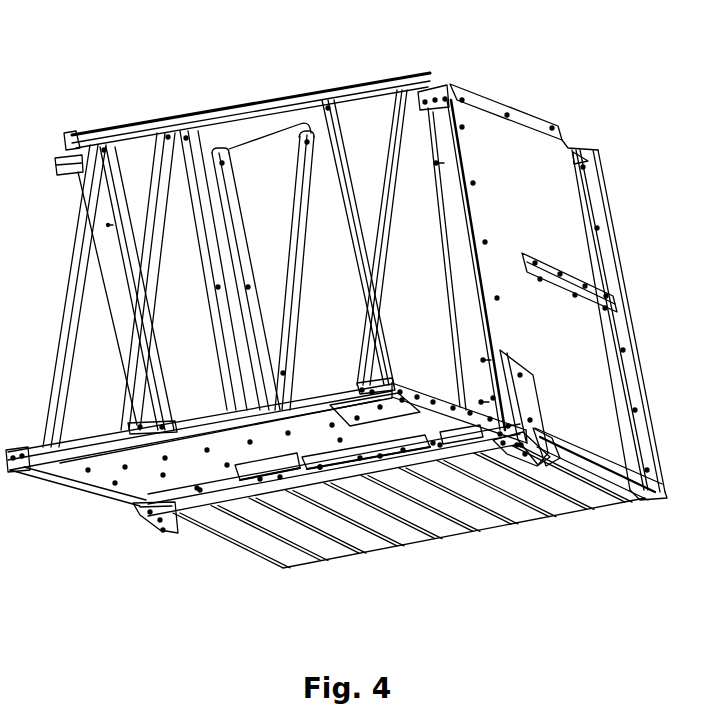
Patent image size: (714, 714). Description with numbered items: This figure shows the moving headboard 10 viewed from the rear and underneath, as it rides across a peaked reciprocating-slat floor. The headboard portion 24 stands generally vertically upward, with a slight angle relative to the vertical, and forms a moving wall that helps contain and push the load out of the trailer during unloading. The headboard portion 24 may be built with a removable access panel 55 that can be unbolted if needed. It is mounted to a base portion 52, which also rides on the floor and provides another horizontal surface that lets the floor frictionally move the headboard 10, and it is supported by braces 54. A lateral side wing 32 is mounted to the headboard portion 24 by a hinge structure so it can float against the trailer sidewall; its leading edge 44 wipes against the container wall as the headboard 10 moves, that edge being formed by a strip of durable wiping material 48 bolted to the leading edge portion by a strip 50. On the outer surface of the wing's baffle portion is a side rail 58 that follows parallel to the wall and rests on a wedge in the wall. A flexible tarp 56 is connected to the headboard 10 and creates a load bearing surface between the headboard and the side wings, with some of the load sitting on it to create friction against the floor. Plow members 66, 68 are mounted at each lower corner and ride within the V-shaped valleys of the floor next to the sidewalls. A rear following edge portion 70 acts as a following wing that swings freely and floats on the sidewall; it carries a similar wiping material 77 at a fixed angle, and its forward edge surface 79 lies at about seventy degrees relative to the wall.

The headboard 10 is at (578, 86).
The headboard portion 24 is at (130, 153).
The side wing 32 is at (531, 176).
The edge 44 is at (658, 437).
The strip of another material 48 is at (650, 397).
The strip 50 is at (618, 330).
The base portion 52 is at (433, 430).
The braces 54 is at (72, 251).
The access panel 55 is at (280, 195).
The tarp 56 is at (404, 553).
The side rail 58 is at (605, 292).
The plow member 66 is at (542, 468).
The plow member 68 is at (176, 535).
The rear following edge portion 70 is at (530, 388).
The wiping material 77 is at (549, 455).
The forward edge surface 79 is at (545, 412).